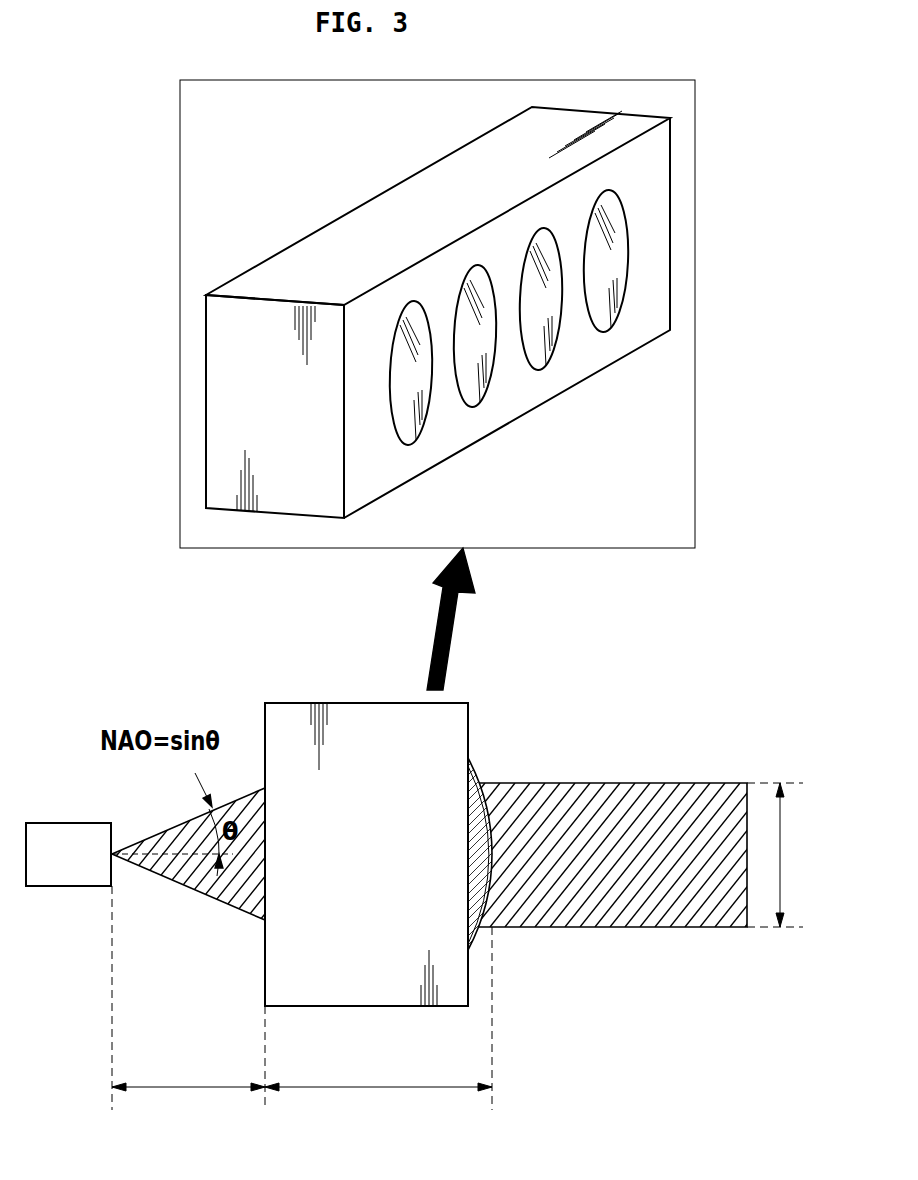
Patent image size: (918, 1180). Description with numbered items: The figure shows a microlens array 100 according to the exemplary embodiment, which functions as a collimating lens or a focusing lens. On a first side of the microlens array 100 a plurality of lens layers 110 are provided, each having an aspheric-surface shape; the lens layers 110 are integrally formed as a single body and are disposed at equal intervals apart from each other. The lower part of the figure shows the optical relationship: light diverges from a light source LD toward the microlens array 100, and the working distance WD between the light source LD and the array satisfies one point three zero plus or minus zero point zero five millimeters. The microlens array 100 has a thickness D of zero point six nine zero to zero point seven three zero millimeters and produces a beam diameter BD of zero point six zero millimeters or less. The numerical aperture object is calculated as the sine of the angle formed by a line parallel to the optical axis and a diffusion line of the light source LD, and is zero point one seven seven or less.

The microlens array 100 is at (396, 208).
The lens layers 110 is at (415, 400).
The light source LD is at (68, 854).
The beam diameter BD is at (783, 855).
The working distance WD is at (188, 1072).
The thickness D is at (378, 1072).